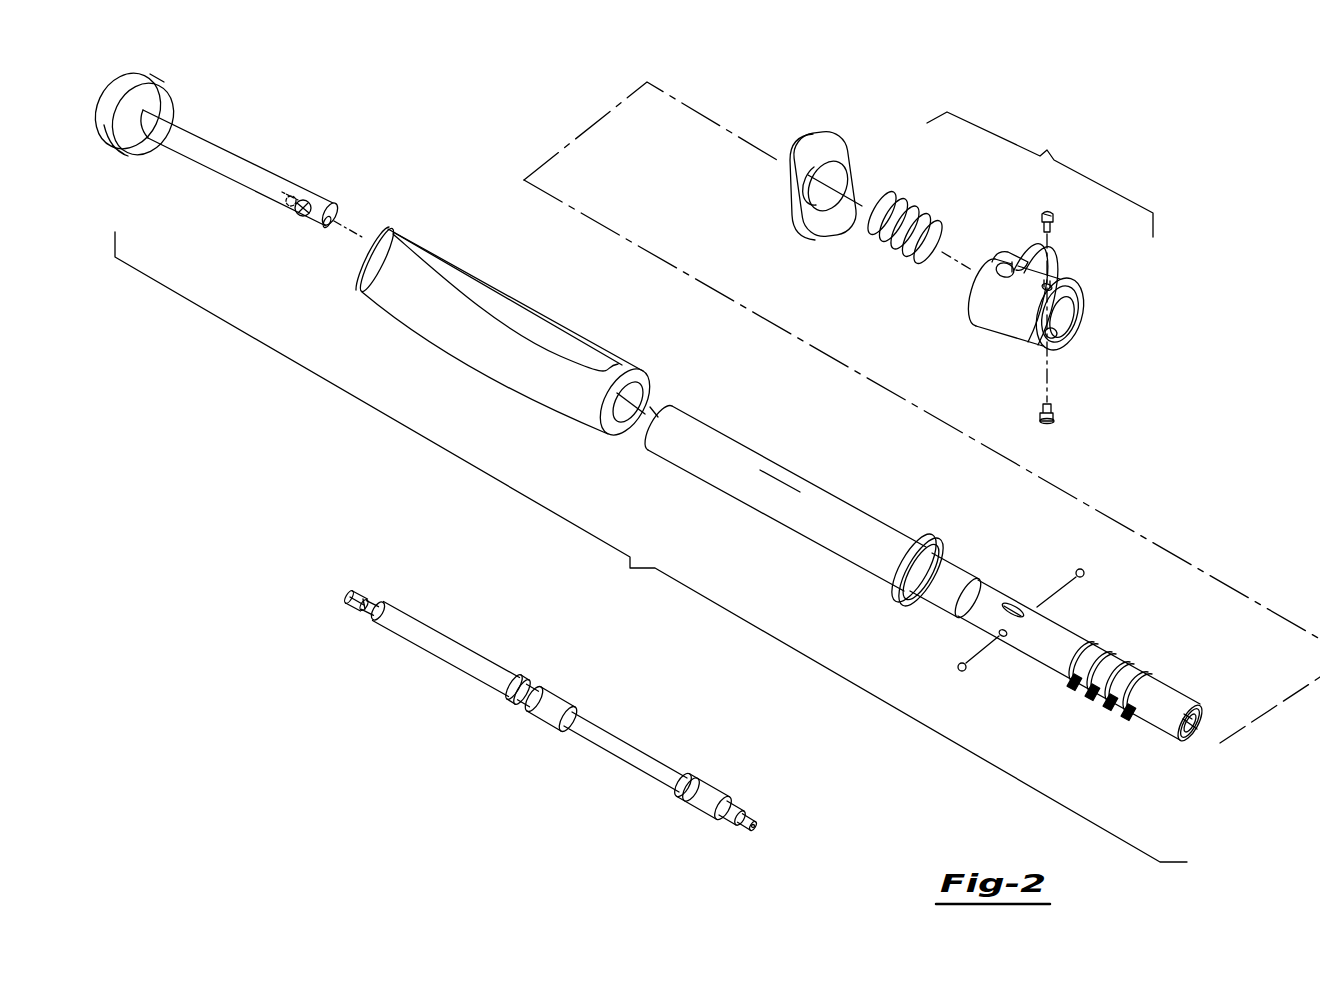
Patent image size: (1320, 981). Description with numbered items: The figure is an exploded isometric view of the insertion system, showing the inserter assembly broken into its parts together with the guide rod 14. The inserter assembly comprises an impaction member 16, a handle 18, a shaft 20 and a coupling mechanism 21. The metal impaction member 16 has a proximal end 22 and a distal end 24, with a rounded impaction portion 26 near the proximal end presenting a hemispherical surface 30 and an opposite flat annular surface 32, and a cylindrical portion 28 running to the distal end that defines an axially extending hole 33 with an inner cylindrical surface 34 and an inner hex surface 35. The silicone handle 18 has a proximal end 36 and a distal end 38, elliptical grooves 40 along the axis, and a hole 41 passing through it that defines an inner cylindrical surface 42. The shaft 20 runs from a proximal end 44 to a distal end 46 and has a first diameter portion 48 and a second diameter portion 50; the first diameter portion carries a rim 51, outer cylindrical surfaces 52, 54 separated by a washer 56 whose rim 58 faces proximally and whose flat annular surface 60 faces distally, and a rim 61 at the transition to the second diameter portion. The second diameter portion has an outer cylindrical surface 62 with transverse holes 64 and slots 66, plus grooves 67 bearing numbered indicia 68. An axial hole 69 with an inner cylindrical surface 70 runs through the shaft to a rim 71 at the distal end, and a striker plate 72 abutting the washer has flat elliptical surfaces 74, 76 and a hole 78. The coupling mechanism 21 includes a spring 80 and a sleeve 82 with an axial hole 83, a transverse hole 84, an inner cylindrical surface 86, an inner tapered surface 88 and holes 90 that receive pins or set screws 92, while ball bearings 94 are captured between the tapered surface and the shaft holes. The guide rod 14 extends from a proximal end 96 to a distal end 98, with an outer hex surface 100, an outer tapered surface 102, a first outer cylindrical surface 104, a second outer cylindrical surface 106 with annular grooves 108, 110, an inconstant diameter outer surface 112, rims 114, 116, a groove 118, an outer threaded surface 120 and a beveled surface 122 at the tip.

The guide rod 14 is at (559, 710).
The impaction member 16 is at (231, 166).
The handle 18 is at (512, 346).
The shaft 20 is at (959, 567).
The coupling mechanism 21 is at (945, 253).
The proximal end 22 is at (148, 117).
The distal end 24 is at (328, 240).
The rounded impaction portion 26 is at (110, 147).
The cylindrical portion 28 is at (217, 172).
The hemispherical surface 30 is at (102, 108).
The flat annular surface 32 is at (170, 112).
The axially extending hole 33 is at (340, 228).
The inner cylindrical surface 34 is at (292, 228).
The inner hex surface 35 is at (283, 211).
The proximal end 36 is at (356, 280).
The distal end 38 is at (607, 428).
The elliptical grooves 40 is at (458, 280).
The hole 41 is at (636, 410).
The inner cylindrical surface 42 is at (610, 392).
The proximal end 44 is at (676, 408).
The distal end 46 is at (1190, 750).
The first diameter portion 48 is at (827, 531).
The second diameter portion 50 is at (1111, 683).
The flat annular surface or rim 51 is at (663, 417).
The outer cylindrical surface 52 is at (785, 456).
The outer cylindrical surface 54 is at (972, 564).
The washer 56 is at (886, 563).
The flat annular surface or rim 58 is at (890, 584).
The flat annular surface 60 is at (911, 600).
The flat annular surface or rim 61 is at (980, 577).
The outer cylindrical surface 62 is at (1050, 653).
The holes 64 is at (1000, 640).
The slots 66 is at (1020, 601).
The grooves 67 is at (1148, 683).
The numbered indicia 68 is at (1130, 720).
The hole 69 is at (1196, 734).
The inner cylindrical surface 70 is at (1205, 722).
The flat annular surface or rim 71 is at (1203, 710).
The striker plate 72 is at (814, 179).
The flat elliptical surface 74 is at (795, 153).
The flat elliptical surface 76 is at (835, 153).
The hole 78 is at (820, 207).
The spring 80 is at (903, 253).
The sleeve 82 is at (1035, 286).
The axial hole 83 is at (1070, 338).
The hole 84 is at (1008, 266).
The inner cylindrical surface 86 is at (995, 266).
The inner tapered surface 88 is at (1075, 314).
The holes 90 is at (1050, 283).
The pins or set screws 92 is at (1057, 218).
The ball bearings 94 is at (1088, 573).
The proximal end 96 is at (348, 595).
The distal end 98 is at (760, 828).
The outer hex surface 100 is at (353, 608).
The outer tapered surface 102 is at (362, 597).
The first outer cylindrical surface 104 is at (370, 620).
The second outer cylindrical surface 106 is at (417, 625).
The annular groove 108 is at (516, 706).
The annular groove 110 is at (540, 690).
The inconstant diameter outer surface 112 is at (620, 758).
The flat annular surface or rim 114 is at (712, 792).
The flat annular surface or rim 116 is at (728, 835).
The groove 118 is at (733, 802).
The outer threaded surface 120 is at (747, 813).
The outer tapered or beveled surface 122 is at (752, 840).